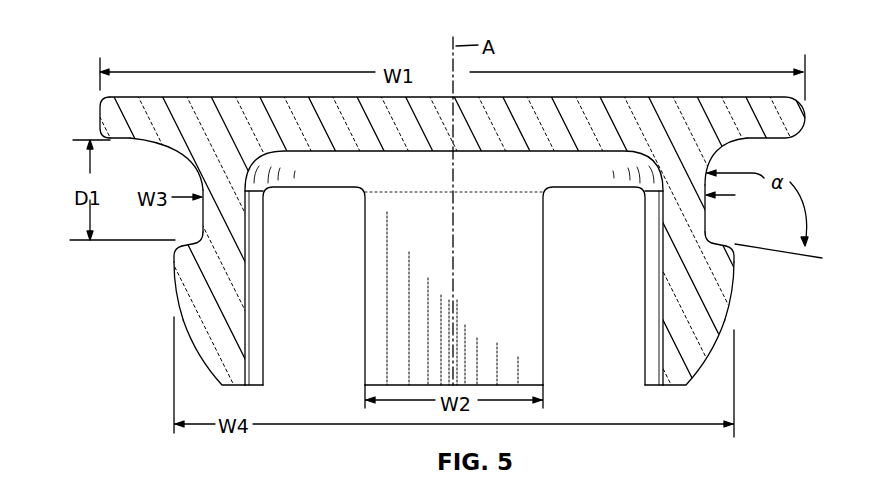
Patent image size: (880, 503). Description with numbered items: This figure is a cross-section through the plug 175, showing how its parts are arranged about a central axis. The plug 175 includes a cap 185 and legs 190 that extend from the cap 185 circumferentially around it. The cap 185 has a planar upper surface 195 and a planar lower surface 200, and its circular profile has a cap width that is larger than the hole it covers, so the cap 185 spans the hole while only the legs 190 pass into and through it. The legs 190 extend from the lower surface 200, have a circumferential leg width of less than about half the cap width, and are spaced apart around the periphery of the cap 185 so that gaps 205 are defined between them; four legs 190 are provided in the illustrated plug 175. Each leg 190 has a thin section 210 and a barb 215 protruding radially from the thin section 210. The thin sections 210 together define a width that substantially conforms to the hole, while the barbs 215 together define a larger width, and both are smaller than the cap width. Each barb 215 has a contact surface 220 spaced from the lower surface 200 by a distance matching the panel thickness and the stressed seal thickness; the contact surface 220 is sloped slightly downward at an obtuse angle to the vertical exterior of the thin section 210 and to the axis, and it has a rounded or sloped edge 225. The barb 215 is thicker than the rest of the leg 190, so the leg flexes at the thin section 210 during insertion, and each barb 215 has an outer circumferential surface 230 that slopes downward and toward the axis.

The plug 175 is at (197, 47).
The cap 185 is at (795, 118).
The legs 190 is at (238, 387).
The upper surface 195 is at (166, 97).
The lower surface 200 is at (130, 139).
The gaps 205 is at (312, 378).
The thin section 210 is at (216, 222).
The barb 215 is at (203, 303).
The contact surface 220 is at (190, 230).
The sloped edge 225 is at (180, 247).
The outer circumferential surface 230 is at (198, 360).